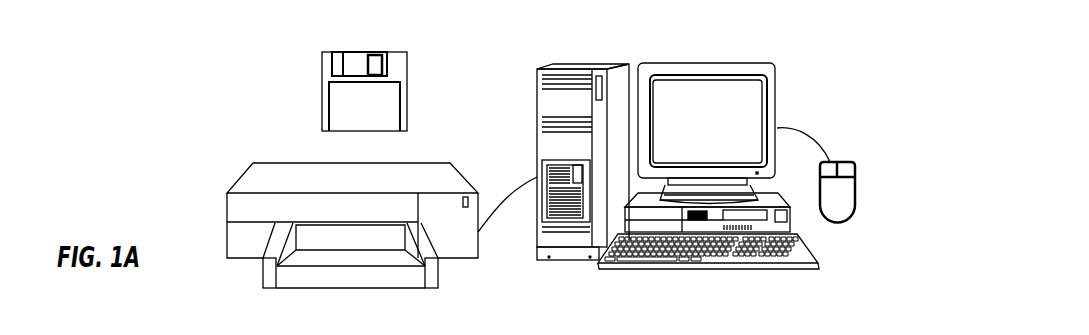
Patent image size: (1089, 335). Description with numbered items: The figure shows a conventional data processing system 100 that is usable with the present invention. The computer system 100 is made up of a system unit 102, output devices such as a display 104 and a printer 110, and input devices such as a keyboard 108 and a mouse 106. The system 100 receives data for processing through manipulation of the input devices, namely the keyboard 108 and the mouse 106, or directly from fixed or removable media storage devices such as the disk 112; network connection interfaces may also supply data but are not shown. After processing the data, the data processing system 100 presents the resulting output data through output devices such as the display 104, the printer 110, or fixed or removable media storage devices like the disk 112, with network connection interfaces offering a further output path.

The data processing system 100 is at (980, 109).
The system unit 102 is at (569, 148).
The display 104 is at (733, 137).
The mouse 106 is at (849, 175).
The keyboard 108 is at (724, 268).
The printer 110 is at (342, 210).
The disk 112 is at (398, 91).